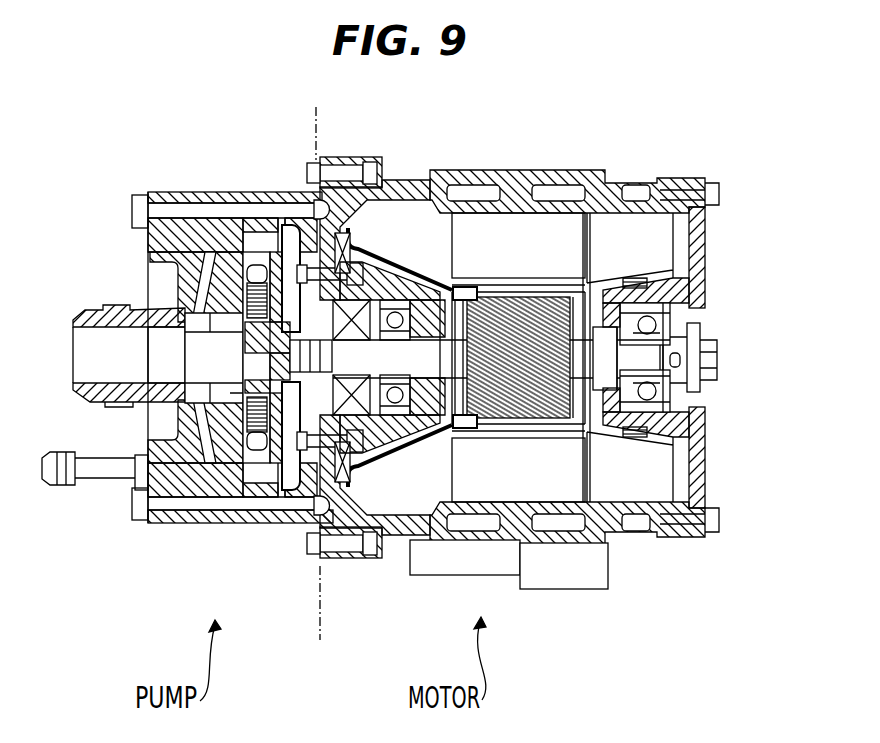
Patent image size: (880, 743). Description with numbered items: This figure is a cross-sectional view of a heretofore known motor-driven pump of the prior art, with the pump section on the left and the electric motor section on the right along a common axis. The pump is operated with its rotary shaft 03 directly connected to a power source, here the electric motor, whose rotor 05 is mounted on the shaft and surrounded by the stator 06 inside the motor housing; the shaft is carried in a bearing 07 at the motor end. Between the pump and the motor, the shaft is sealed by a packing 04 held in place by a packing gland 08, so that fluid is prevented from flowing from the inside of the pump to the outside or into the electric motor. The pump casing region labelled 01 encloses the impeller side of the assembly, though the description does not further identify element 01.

The pump casing 01 is at (214, 250).
The rotary shaft 03 is at (700, 333).
The packing 04 is at (358, 397).
The rotor 05 is at (545, 413).
The stator 06 is at (512, 292).
The bearing 07 is at (660, 437).
The packing gland 08 is at (243, 525).